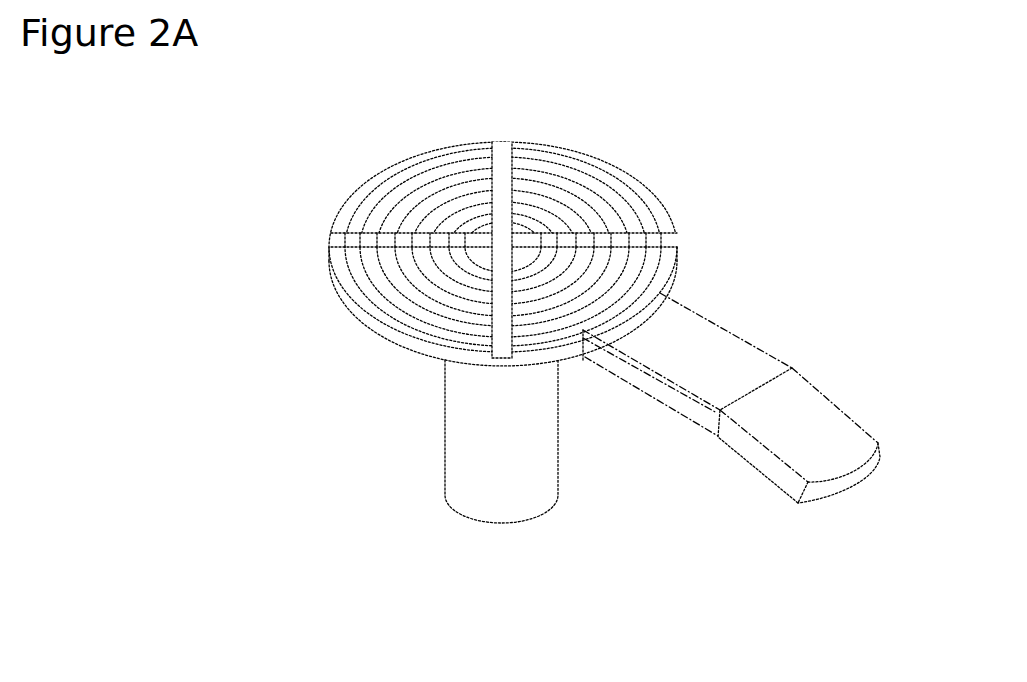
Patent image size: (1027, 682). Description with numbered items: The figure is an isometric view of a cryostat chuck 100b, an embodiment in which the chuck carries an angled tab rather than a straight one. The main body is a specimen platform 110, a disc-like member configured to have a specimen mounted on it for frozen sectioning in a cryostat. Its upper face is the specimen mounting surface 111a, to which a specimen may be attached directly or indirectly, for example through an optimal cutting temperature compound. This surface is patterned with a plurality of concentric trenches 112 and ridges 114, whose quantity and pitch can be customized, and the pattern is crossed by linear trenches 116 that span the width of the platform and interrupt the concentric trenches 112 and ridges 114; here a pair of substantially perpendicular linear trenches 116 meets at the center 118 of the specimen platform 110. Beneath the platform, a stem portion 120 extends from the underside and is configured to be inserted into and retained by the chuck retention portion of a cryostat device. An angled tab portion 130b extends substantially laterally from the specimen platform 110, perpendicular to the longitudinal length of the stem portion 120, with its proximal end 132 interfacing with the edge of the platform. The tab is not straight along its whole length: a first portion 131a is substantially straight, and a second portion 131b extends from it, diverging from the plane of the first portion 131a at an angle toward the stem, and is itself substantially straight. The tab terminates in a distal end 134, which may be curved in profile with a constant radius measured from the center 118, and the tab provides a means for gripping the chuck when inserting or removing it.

The cryostat chuck 100b is at (840, 96).
The specimen platform 110 is at (423, 352).
The specimen mounting surface 111a is at (598, 232).
The concentric trenches 112 is at (390, 263).
The ridges 114 is at (372, 229).
The linear trenches 116 is at (500, 168).
The center of specimen platform 118 is at (498, 243).
The stem portion 120 is at (467, 443).
The angled tab portion 130b is at (622, 538).
The first portion 131a is at (652, 355).
The second portion 131b is at (825, 462).
The proximal end 132 is at (583, 365).
The distal end 134 is at (850, 480).